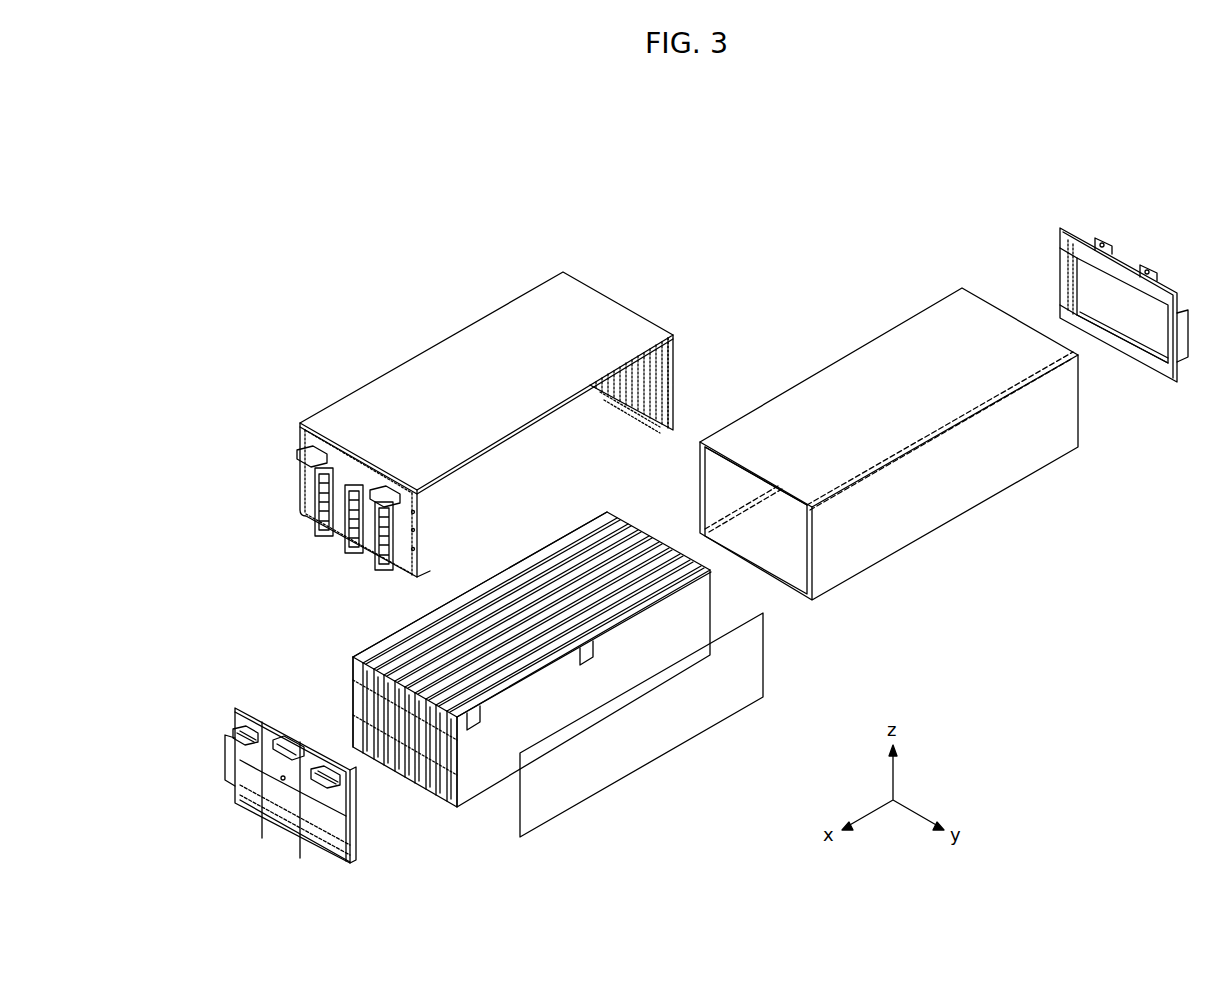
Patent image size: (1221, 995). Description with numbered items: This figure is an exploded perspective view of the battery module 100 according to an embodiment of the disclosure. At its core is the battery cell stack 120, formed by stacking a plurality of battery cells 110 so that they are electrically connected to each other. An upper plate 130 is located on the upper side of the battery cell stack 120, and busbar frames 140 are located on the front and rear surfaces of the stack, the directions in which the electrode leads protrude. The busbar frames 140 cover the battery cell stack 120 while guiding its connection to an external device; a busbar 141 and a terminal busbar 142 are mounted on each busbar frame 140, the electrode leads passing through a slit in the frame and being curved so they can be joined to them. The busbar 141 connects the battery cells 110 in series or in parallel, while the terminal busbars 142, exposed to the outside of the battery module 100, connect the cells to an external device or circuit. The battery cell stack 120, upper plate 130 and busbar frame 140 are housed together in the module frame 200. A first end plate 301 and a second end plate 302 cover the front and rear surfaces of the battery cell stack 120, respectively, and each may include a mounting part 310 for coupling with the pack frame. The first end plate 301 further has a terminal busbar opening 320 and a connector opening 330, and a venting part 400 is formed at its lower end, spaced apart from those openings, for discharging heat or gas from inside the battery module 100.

The battery module 100 is at (685, 224).
The battery cell 110 is at (563, 702).
The battery cell stack 120 is at (478, 804).
The upper plate 130 is at (437, 363).
The busbar frame 140 is at (627, 423).
The busbar 141 is at (347, 536).
The terminal busbar 142 is at (385, 530).
The module frame 200 is at (935, 507).
The first end plate 301 is at (166, 686).
The second end plate 302 is at (1172, 296).
The mounting part 310 is at (227, 767).
The terminal busbar opening 320 is at (300, 784).
The connector opening 330 is at (287, 737).
The venting part 400 is at (288, 829).